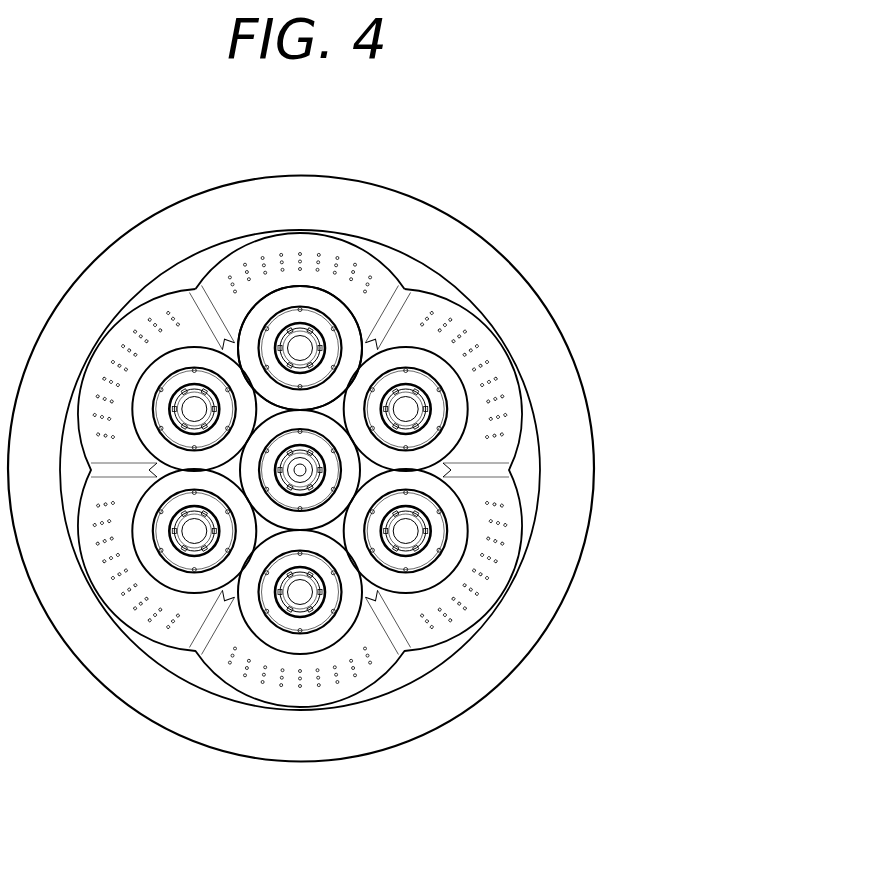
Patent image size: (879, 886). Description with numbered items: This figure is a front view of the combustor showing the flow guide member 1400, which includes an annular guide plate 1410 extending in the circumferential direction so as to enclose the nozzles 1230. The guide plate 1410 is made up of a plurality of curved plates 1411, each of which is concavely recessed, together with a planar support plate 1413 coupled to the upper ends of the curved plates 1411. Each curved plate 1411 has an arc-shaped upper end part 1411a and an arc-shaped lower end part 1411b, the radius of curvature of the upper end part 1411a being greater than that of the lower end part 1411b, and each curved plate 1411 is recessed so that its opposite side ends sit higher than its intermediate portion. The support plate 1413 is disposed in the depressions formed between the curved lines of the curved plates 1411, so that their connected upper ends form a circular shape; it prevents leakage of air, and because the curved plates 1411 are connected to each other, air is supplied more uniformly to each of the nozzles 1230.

The flow guide member 1400 is at (451, 270).
The nozzle 1230 is at (447, 375).
The guide plate 1410 is at (399, 416).
The curved plate 1411 is at (376, 414).
The upper end part 1411a is at (353, 243).
The lower end part 1411b is at (282, 287).
The support plate 1413 is at (528, 457).